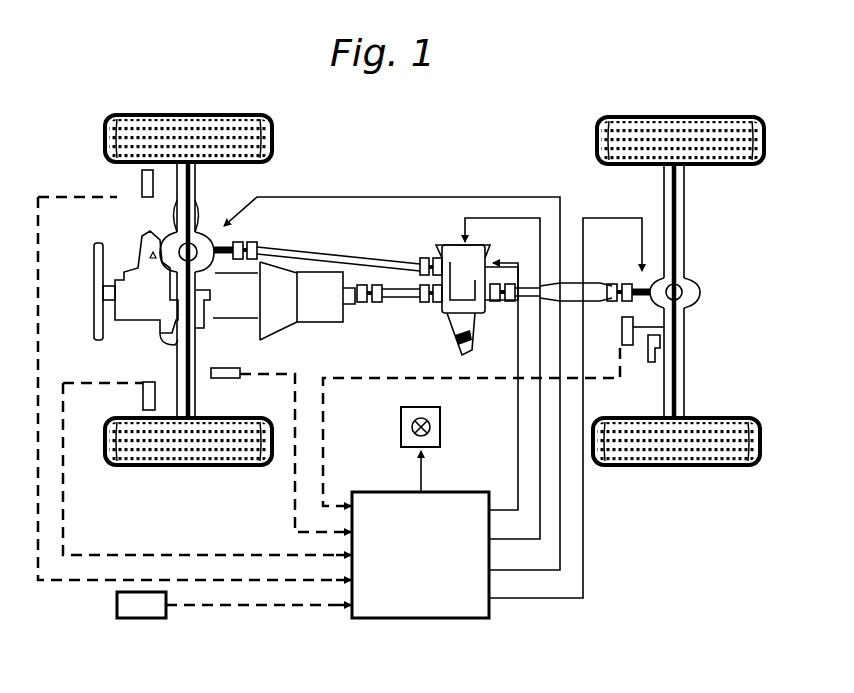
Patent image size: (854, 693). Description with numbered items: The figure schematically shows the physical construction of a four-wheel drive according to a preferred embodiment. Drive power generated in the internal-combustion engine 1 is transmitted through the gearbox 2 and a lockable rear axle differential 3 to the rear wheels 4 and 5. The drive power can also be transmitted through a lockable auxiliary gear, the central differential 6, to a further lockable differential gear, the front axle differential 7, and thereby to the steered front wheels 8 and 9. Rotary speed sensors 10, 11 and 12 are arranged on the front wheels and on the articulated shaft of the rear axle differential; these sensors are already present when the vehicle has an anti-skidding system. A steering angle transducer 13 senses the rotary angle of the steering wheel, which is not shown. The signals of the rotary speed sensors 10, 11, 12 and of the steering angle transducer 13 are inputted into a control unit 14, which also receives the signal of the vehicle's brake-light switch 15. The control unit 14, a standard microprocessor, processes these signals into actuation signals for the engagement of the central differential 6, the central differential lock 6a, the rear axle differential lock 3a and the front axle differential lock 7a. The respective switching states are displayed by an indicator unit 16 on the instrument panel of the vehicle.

The internal-combustion engine 1 is at (158, 306).
The gearbox 2 is at (330, 306).
The rear axle differential 3 is at (642, 291).
The rear axle differential lock 3a is at (690, 286).
The rear wheel 4 is at (612, 117).
The rear wheel 5 is at (678, 467).
The central differential 6 is at (456, 281).
The central differential lock 6a is at (455, 258).
The front axle differential 7 is at (301, 290).
The front axle differential lock 7a is at (213, 242).
The front wheel 8 is at (255, 117).
The front wheel 9 is at (218, 466).
The rotary speed sensor 10 is at (142, 186).
The rotary speed sensor 11 is at (146, 384).
The rotary speed sensor 12 is at (668, 323).
The steering angle transducer 13 is at (238, 369).
The control unit 14 is at (437, 607).
The brake-light switch 15 is at (138, 608).
The indicator unit 16 is at (437, 437).